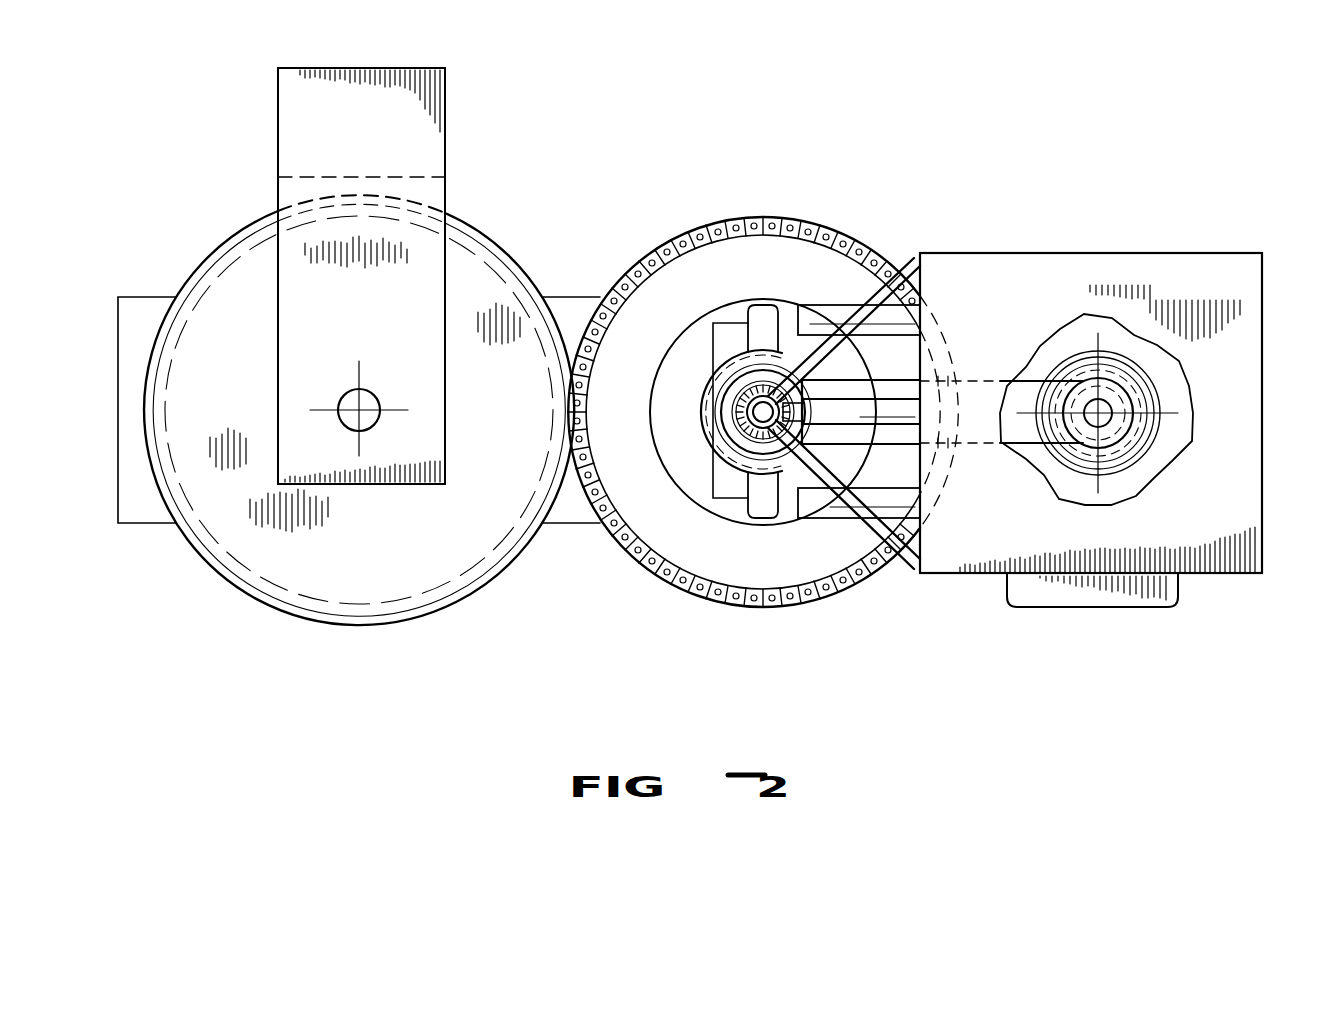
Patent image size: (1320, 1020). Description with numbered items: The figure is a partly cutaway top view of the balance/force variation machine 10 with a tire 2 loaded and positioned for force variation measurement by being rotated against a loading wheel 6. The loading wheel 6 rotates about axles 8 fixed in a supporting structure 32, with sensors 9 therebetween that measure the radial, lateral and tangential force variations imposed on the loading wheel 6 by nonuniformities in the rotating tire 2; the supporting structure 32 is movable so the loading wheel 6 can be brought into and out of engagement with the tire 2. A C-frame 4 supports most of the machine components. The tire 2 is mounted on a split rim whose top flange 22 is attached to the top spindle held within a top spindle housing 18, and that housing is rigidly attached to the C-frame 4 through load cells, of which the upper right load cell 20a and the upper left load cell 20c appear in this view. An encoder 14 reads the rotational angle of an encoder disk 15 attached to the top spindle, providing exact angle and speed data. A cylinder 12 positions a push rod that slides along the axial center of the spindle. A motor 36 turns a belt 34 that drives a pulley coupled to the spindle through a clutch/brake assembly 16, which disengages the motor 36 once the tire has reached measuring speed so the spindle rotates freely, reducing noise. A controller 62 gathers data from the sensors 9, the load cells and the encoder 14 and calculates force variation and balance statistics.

The tire 2 is at (728, 218).
The C-frame 4 is at (1060, 252).
The loading wheel 6 is at (262, 585).
The axles 8 is at (345, 400).
The sensors 9 is at (437, 418).
The balance/force variation machine 10 is at (920, 157).
The cylinder 12 is at (752, 400).
The encoder 14 is at (790, 413).
The encoder disk 15 is at (753, 447).
The clutch/brake assembly 16 is at (740, 478).
The top spindle housing 18 is at (706, 407).
The upper right load cell 20a is at (787, 512).
The upper left load cell 20c is at (788, 318).
The top flange 22 is at (692, 320).
The supporting structure 32 is at (328, 137).
The belt 34 is at (1018, 454).
The motor 36 is at (1132, 453).
The controller 62 is at (1127, 598).